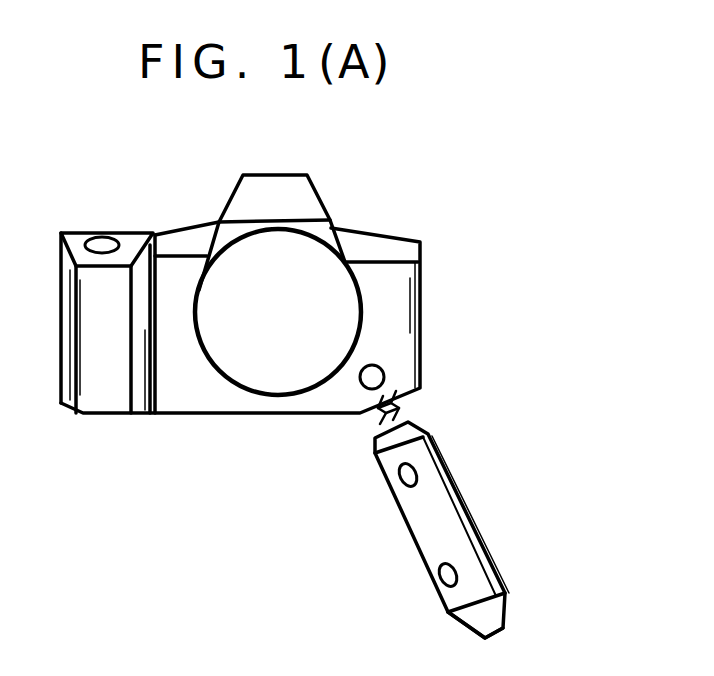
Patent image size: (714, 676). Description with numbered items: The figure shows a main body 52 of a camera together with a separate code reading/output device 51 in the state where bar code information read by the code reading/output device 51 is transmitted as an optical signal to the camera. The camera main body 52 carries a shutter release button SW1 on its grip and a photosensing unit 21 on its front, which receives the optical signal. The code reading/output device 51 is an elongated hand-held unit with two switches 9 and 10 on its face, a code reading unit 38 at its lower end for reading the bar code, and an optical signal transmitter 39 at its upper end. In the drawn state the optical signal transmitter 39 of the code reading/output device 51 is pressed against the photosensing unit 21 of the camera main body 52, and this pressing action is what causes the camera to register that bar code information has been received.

The main body of a camera 52 is at (122, 222).
The shutter release button SW1 is at (102, 245).
The photosensing unit 21 is at (372, 377).
The optical signal transmitter 39 is at (412, 430).
The code reading/output device 51 is at (443, 503).
The switch 10 is at (403, 482).
The switch 9 is at (440, 576).
The code reading unit 38 is at (506, 608).